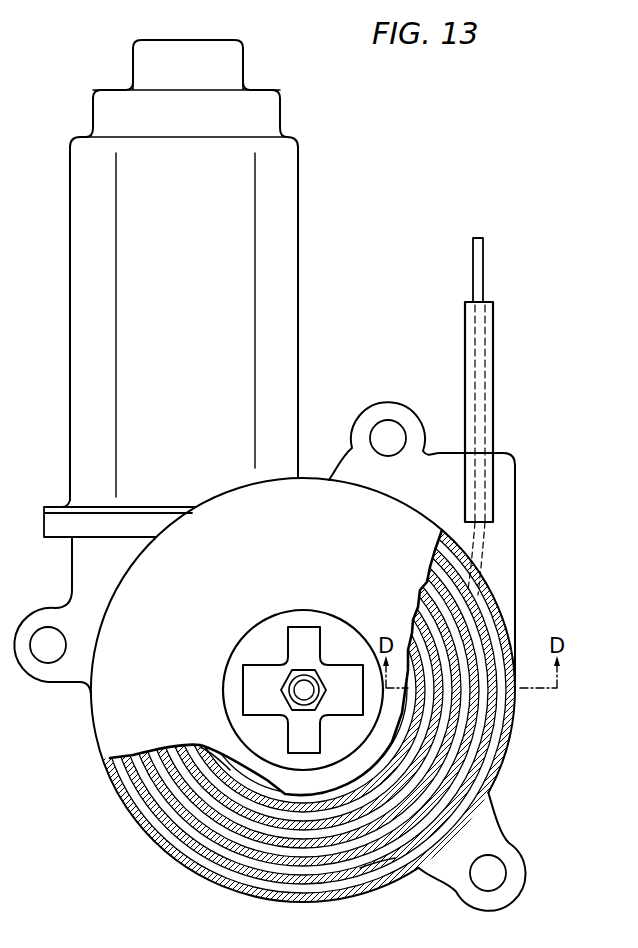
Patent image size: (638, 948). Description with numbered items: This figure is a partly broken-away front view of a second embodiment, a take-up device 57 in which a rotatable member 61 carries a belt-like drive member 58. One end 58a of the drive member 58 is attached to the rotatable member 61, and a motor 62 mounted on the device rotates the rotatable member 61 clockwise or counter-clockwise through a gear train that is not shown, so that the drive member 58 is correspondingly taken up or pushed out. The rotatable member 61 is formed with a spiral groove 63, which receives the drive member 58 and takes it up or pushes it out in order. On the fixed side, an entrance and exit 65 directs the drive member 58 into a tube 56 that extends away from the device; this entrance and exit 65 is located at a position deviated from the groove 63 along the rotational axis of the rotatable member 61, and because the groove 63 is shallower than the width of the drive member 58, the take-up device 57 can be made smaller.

The motor 62 is at (287, 213).
The rotatable member 61 is at (110, 725).
The take-up device 57 is at (138, 825).
The one end of drive member 58a is at (200, 747).
The spiral groove 63 is at (377, 870).
The tube 56 is at (493, 345).
The drive member 58 is at (477, 262).
The entrance and exit 65 is at (485, 538).